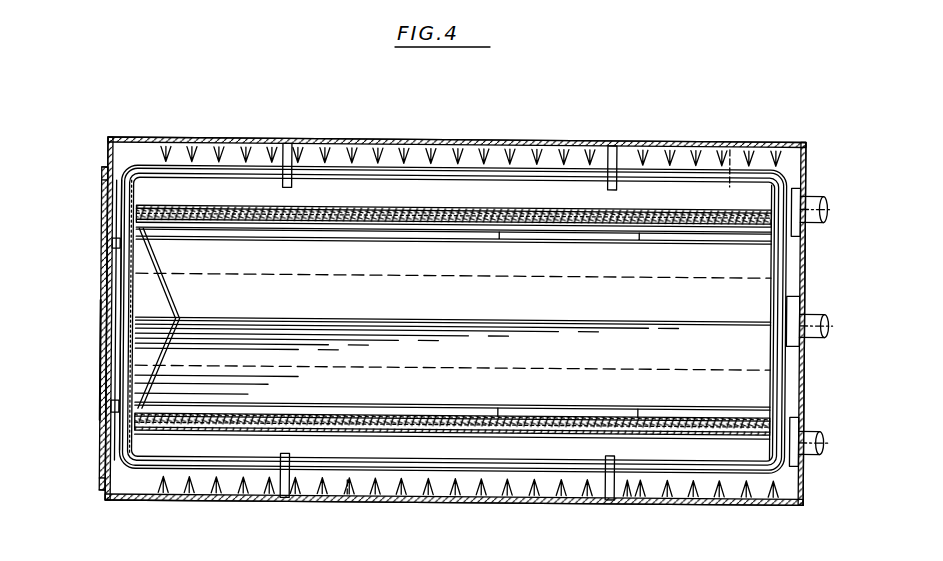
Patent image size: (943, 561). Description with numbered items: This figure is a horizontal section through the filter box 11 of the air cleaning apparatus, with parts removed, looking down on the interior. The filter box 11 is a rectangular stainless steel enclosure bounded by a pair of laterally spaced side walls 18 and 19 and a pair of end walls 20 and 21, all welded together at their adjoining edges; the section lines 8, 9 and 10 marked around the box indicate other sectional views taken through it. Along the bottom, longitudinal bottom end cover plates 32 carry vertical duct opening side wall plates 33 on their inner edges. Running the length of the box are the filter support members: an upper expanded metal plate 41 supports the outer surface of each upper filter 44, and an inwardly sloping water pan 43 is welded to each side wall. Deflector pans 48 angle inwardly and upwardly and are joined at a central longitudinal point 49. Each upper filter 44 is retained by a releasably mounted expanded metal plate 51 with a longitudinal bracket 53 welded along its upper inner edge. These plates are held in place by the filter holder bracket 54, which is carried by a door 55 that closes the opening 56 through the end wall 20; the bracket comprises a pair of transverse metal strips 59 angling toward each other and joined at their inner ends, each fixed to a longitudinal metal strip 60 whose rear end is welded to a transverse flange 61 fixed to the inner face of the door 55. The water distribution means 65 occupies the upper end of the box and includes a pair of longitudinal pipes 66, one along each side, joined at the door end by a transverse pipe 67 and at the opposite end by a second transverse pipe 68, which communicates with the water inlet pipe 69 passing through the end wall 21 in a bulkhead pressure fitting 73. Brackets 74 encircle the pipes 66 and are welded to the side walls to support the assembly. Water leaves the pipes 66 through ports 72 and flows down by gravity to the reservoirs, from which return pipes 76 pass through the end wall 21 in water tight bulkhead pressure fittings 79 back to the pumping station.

The section line 8- 8 is at (817, 543).
The section line 9- 9 is at (105, 548).
The section line 10- 10 is at (184, 521).
The filter box 11 is at (404, 138).
The side wall 18 is at (380, 500).
The side wall 19 is at (308, 136).
The end wall 20 is at (107, 148).
The end wall 21 is at (806, 166).
The bottom end cover plate 32 is at (348, 500).
The duct opening side wall plate 33 is at (590, 366).
The upper expanded metal plate 41 is at (468, 432).
The water pan 43 is at (532, 440).
The upper filter 44 is at (500, 414).
The deflector pan 48 is at (362, 397).
The central longitudinal point 49 is at (346, 318).
The expanded metal plate 51 is at (430, 407).
The longitudinal bracket 53 is at (620, 408).
The filter holder bracket 54 is at (200, 292).
The door 55 is at (104, 424).
The opening 56 is at (104, 480).
The transverse metal strip 59 is at (182, 330).
The longitudinal metal strip 60 is at (122, 505).
The transverse flange 61 is at (112, 406).
The water distribution means 65 is at (636, 482).
The longitudinal pipe 66 is at (660, 475).
The transverse pipe 67 is at (121, 364).
The second transverse pipe 68 is at (772, 264).
The water inlet pipe 69 is at (826, 333).
The port 72 is at (462, 480).
The bulkhead pressure fitting 73 is at (800, 306).
The bracket 74 is at (608, 462).
The return pipe 76 is at (818, 428).
The bulkhead pressure fitting 79 is at (806, 466).